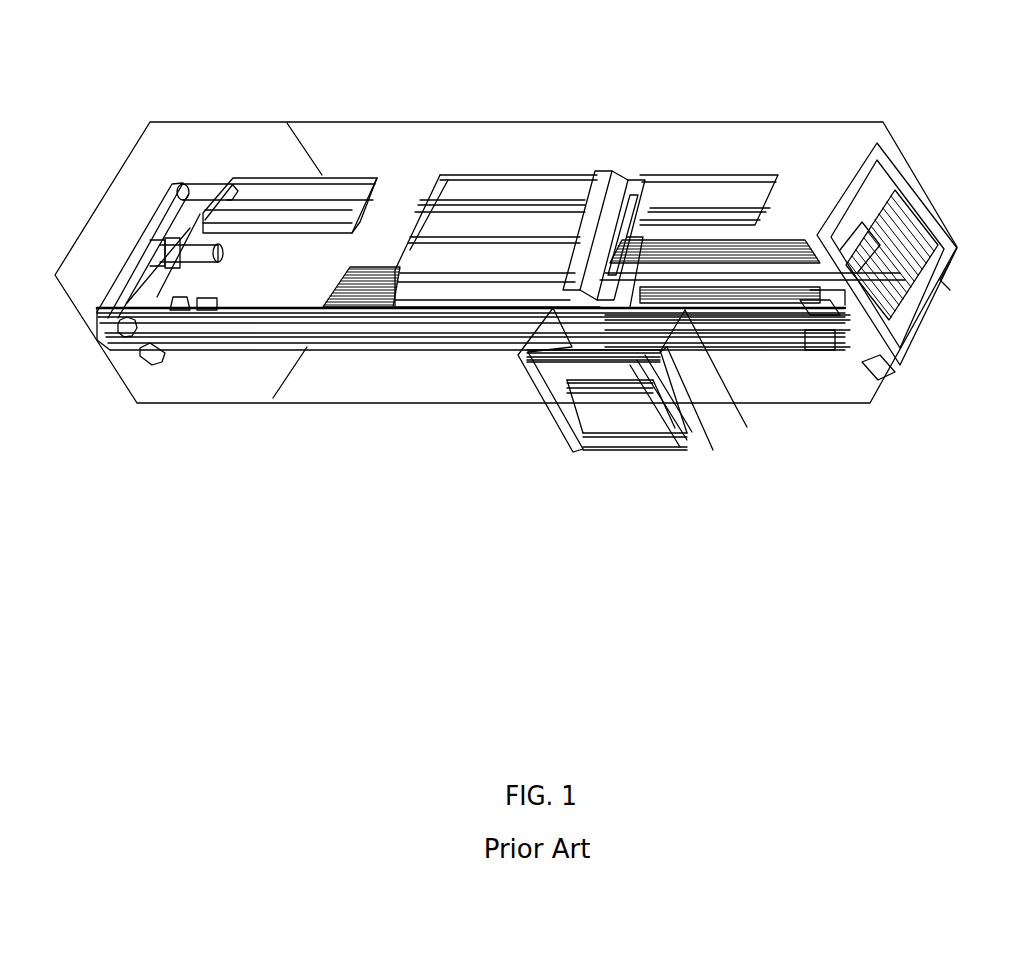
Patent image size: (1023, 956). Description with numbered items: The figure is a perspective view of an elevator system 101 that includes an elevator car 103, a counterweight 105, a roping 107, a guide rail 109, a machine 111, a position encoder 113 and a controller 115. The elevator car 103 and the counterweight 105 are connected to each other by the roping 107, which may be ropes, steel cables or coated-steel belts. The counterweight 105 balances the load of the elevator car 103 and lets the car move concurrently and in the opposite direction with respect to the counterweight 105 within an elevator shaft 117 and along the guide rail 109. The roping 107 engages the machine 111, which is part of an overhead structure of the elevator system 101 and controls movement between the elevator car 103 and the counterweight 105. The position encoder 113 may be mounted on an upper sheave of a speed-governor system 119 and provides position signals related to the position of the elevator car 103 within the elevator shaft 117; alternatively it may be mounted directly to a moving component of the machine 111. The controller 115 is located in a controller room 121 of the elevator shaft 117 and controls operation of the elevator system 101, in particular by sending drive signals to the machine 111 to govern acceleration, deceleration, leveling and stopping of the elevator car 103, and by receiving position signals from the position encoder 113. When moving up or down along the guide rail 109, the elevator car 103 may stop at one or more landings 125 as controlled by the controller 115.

The elevator system 101 is at (530, 289).
The elevator car 103 is at (473, 260).
The counterweight 105 is at (335, 317).
The roping 107 is at (705, 270).
The guide rail 109 is at (397, 327).
The machine 111 is at (890, 207).
The position encoder 113 is at (813, 320).
The controller 115 is at (618, 403).
The elevator shaft 117 is at (388, 132).
The speed-governor system 119 is at (795, 342).
The controller room 121 is at (715, 453).
The landings 125 is at (255, 177).